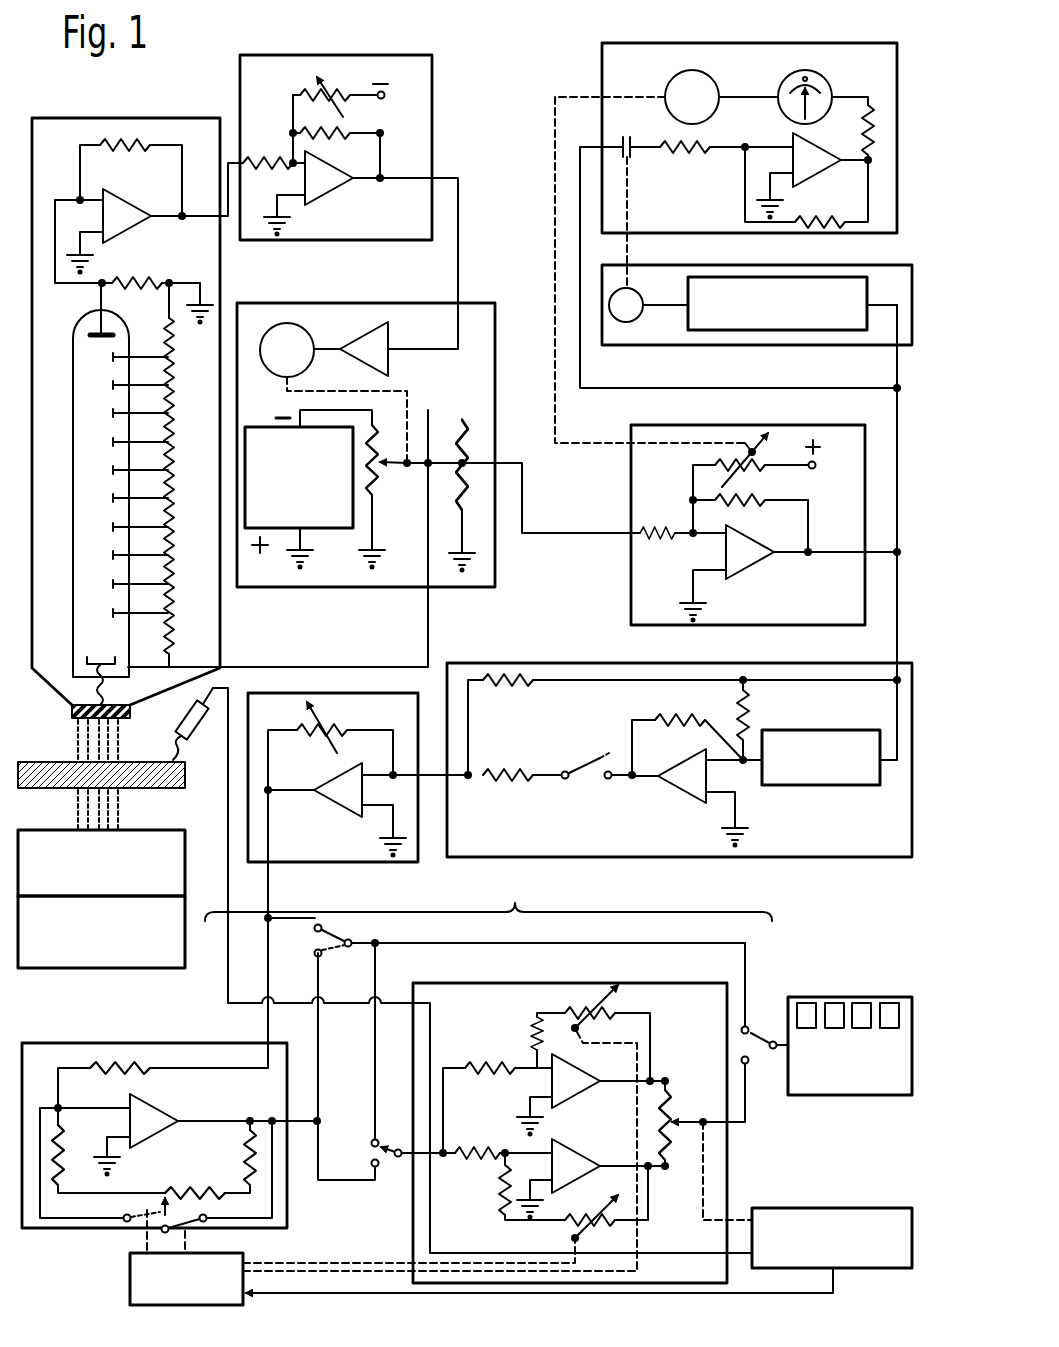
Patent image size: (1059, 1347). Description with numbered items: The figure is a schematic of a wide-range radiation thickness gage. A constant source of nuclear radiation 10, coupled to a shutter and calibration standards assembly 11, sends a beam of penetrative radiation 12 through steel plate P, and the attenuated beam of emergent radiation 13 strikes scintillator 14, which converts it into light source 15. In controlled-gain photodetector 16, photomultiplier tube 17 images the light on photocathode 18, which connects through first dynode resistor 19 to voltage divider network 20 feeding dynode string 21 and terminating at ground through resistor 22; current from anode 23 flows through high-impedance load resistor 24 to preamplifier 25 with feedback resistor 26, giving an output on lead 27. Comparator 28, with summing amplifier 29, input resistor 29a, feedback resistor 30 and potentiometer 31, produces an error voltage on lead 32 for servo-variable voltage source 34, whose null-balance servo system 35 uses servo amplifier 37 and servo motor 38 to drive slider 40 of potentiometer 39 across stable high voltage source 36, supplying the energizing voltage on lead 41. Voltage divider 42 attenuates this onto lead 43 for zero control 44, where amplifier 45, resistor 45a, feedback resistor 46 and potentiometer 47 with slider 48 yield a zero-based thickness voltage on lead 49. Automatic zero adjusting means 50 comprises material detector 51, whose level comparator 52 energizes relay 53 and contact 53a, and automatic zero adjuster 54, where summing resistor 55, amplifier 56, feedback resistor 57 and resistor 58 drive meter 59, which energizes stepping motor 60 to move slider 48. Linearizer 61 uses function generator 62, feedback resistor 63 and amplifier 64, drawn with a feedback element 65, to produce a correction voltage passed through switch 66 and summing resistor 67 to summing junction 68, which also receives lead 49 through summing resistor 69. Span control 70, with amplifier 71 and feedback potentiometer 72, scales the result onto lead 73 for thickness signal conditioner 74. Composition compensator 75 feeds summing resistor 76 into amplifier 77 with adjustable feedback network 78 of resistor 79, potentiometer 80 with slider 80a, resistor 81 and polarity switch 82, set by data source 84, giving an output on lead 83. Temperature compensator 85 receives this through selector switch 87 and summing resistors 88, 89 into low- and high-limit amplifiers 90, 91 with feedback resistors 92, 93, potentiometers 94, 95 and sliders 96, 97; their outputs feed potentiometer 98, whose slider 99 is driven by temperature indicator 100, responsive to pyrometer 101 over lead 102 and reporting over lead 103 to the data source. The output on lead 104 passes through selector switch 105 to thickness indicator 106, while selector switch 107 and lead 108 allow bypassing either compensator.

The constant source of nuclear radiation 10 is at (185, 948).
The shutter and calibration standards assembly 11 is at (185, 850).
The beam of penetrative radiation 12 is at (122, 799).
The beam of emergent radiation 13 is at (76, 746).
The scintillator 14 is at (132, 710).
The light source 15 is at (106, 694).
The controlled-gain photodetector 16 is at (44, 118).
The photomultiplier tube 17 is at (72, 525).
The photocathode 18 is at (98, 657).
The first dynode resistor 19 is at (171, 641).
The voltage divider network 20 is at (172, 517).
The dynode string 21 is at (113, 529).
The resistor 22 is at (172, 326).
The anode 23 is at (98, 340).
The high-impedance load resistor 24 is at (130, 282).
The preamplifier 25 is at (120, 198).
The feedback resistor 26 is at (137, 152).
The lead 27 is at (192, 214).
The comparator 28 is at (432, 92).
The summing amplifier 29 is at (323, 193).
The resistor 29a is at (258, 159).
The feedback resistor 30 is at (328, 142).
The potentiometer 31 is at (300, 80).
The lead 32 is at (457, 221).
The servo-variable voltage source 34 is at (495, 303).
The null-balance servo system 35 is at (345, 333).
The stable high voltage source 36 is at (264, 427).
The servo amplifier 37 is at (392, 325).
The servo motor 38 is at (270, 374).
The multi-turn high-resolution potentiometer 39 is at (375, 440).
The potentiometer slider 40 is at (384, 469).
The lead 41 is at (427, 618).
The voltage divider 42 is at (489, 411).
The lead 43 is at (522, 490).
The zero control 44 is at (853, 425).
The operational summing amplifier 45 is at (772, 565).
The resistor 45a is at (655, 527).
The feedback resistor 46 is at (756, 509).
The potentiometer 47 is at (754, 477).
The potentiometer slider 48 is at (764, 452).
The lead 49 is at (896, 469).
The automatic zero adjusting means 50 is at (541, 258).
The material detector 51 is at (906, 265).
The level comparator 52 is at (688, 283).
The relay 53 is at (640, 317).
The relay contact 53a is at (618, 143).
The automatic zero adjuster 54 is at (885, 43).
The summing resistor 55 is at (703, 143).
The operational amplifier 56 is at (825, 175).
The feedback resistor 57 is at (824, 218).
The resistor 58 is at (862, 128).
The meter 59 is at (828, 78).
The stepping motor 60 is at (716, 78).
The linearizer 61 is at (852, 663).
The function generator 62 is at (805, 730).
The feedback resistor 63 is at (749, 714).
The operational amplifier 64 is at (695, 802).
The feedback resistor 65 is at (685, 713).
The normally closed switch 66 is at (588, 781).
The summing resistor 67 is at (515, 769).
The summing junction 68 is at (467, 780).
The summing resistor 69 is at (531, 685).
The span control 70 is at (401, 716).
The operational summing amplifier 71 is at (343, 815).
The adjustable feedback potentiometer 72 is at (328, 748).
The lead 73 is at (270, 895).
The thickness signal conditioner 74 is at (691, 896).
The composition compensator 75 is at (64, 1043).
The summing resistor 76 is at (104, 1077).
The operational amplifier 77 is at (162, 1103).
The adjustable feedback network 78 is at (204, 1140).
The resistor 79 is at (67, 1155).
The linear potentiometer 80 is at (210, 1190).
The potentiometer slider 80a is at (141, 1211).
The resistor 81 is at (247, 1141).
The SPDT polarity selector switch 82 is at (156, 1226).
The lead 83 is at (319, 1030).
The data source 84 is at (243, 1259).
The temperature compensator 85 is at (705, 1030).
The selector switch 87 is at (396, 1149).
The summing resistor 88 is at (472, 1151).
The summing resistor 89 is at (494, 1078).
The low-limit operational summing amplifier 90 is at (579, 1148).
The high-limit operational summing amplifier 91 is at (582, 1070).
The fixed resistor 92 is at (502, 1200).
The fixed resistor 93 is at (529, 1033).
The linear potentiometer 94 is at (598, 1214).
The linear potentiometer 95 is at (610, 995).
The potentiometer slider 96 is at (594, 1239).
The potentiometer slider 97 is at (584, 1027).
The precision linear potentiometer 98 is at (670, 1112).
The potentiometer slider 99 is at (678, 1125).
The temperature indicator 100 is at (796, 1208).
The pyrometer 101 is at (198, 742).
The lead 102 is at (432, 1030).
The lead 103 is at (853, 1293).
The lead 104 is at (747, 1108).
The selector switch 105 is at (772, 1040).
The thickness indicator 106 is at (832, 997).
The selector switch 107 is at (349, 934).
The lead 108 is at (435, 943).